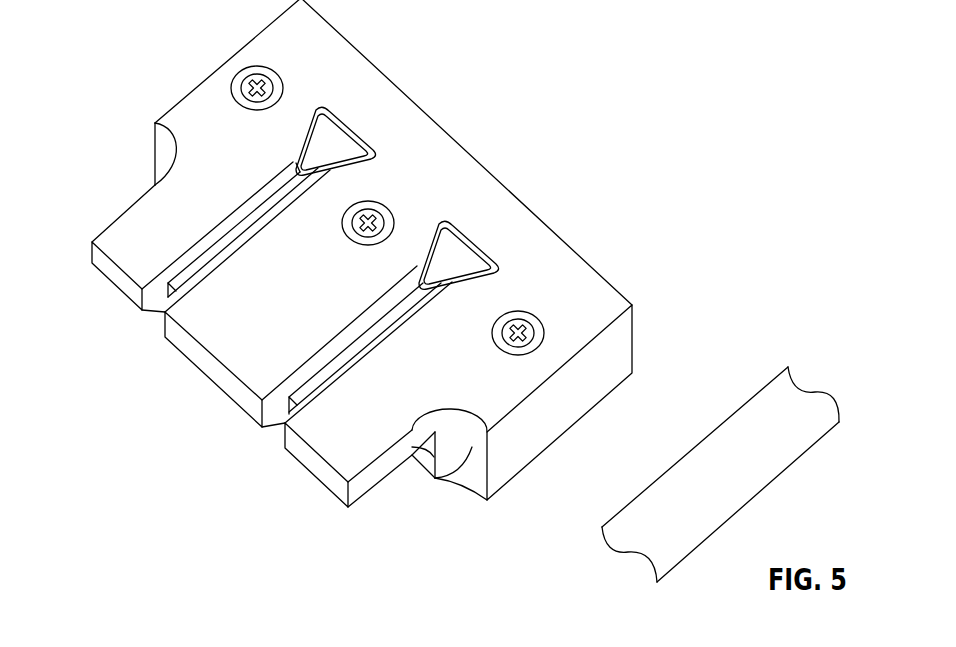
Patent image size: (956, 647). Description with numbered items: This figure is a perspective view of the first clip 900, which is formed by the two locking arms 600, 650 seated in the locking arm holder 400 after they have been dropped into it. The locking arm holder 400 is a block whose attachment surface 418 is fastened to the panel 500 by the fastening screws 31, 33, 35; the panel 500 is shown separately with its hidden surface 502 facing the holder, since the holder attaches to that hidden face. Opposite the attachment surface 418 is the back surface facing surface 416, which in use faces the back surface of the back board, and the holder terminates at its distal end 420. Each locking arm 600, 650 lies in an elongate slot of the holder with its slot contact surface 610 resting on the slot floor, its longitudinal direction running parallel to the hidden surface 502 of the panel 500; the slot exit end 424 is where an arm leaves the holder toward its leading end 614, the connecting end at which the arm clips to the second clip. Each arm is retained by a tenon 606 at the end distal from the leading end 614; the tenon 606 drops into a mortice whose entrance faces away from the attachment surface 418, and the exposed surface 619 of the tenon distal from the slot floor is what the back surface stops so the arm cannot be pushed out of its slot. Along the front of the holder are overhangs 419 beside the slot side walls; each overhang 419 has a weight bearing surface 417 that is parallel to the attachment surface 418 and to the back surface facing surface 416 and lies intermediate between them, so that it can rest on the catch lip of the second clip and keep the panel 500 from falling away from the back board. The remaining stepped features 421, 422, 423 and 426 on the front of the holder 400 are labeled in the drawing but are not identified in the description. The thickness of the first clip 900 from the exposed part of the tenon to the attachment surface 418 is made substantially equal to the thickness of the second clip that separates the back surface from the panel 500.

The first clip 900 is at (138, 57).
The locking arm holder 400 is at (414, 137).
The back surface facing surface 416 is at (517, 238).
The attachment surface 418 is at (558, 438).
The overhang 419 is at (360, 481).
The locking arm holder distal end 420 is at (483, 163).
The lower step 421 is at (315, 464).
The middle step 422 is at (218, 373).
The upper step 423 is at (116, 280).
The locking arm holder slot exit end 424 is at (151, 326).
The gap 426 is at (274, 430).
The weight bearing surface 417 is at (438, 478).
The locking arm leading end 614 is at (160, 283).
The locking arm 600 is at (259, 206).
The locking arm slot contact surface 610 is at (211, 254).
The second locking arm 650 is at (382, 314).
The locking arm tenon 606 is at (330, 133).
The locking arm exposed surface 619 is at (292, 164).
The locking arm holder fastening screw 31 is at (270, 77).
The locking arm holder fastening screw 33 is at (382, 212).
The locking arm holder fastening screw 35 is at (527, 325).
The panel hidden surface 502 is at (679, 394).
The panel 500 is at (740, 487).